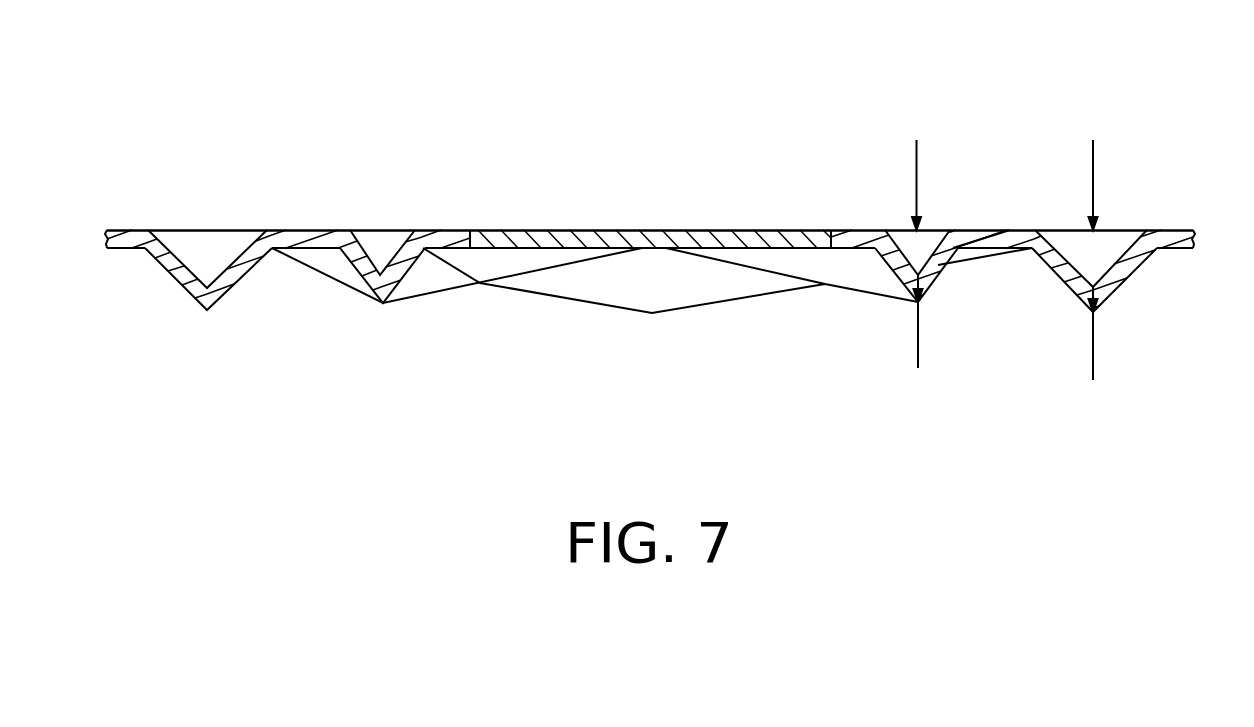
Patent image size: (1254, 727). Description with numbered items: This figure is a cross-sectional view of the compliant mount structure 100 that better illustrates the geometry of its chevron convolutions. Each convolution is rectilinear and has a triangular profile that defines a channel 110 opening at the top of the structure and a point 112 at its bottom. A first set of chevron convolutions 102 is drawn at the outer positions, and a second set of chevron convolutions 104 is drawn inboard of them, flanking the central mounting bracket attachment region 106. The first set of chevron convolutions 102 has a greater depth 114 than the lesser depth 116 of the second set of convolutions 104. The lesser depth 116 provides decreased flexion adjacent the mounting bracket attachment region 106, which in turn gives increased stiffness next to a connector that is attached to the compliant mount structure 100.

The compliant mount structure 100 is at (190, 28).
The first set of chevron convolutions 102 is at (168, 286).
The second set of chevron convolutions 104 is at (357, 286).
The mounting bracket attachment region 106 is at (608, 230).
The channel 110 is at (174, 218).
The point 112 is at (207, 312).
The greater depth 114 is at (1092, 345).
The lesser depth 116 is at (917, 345).